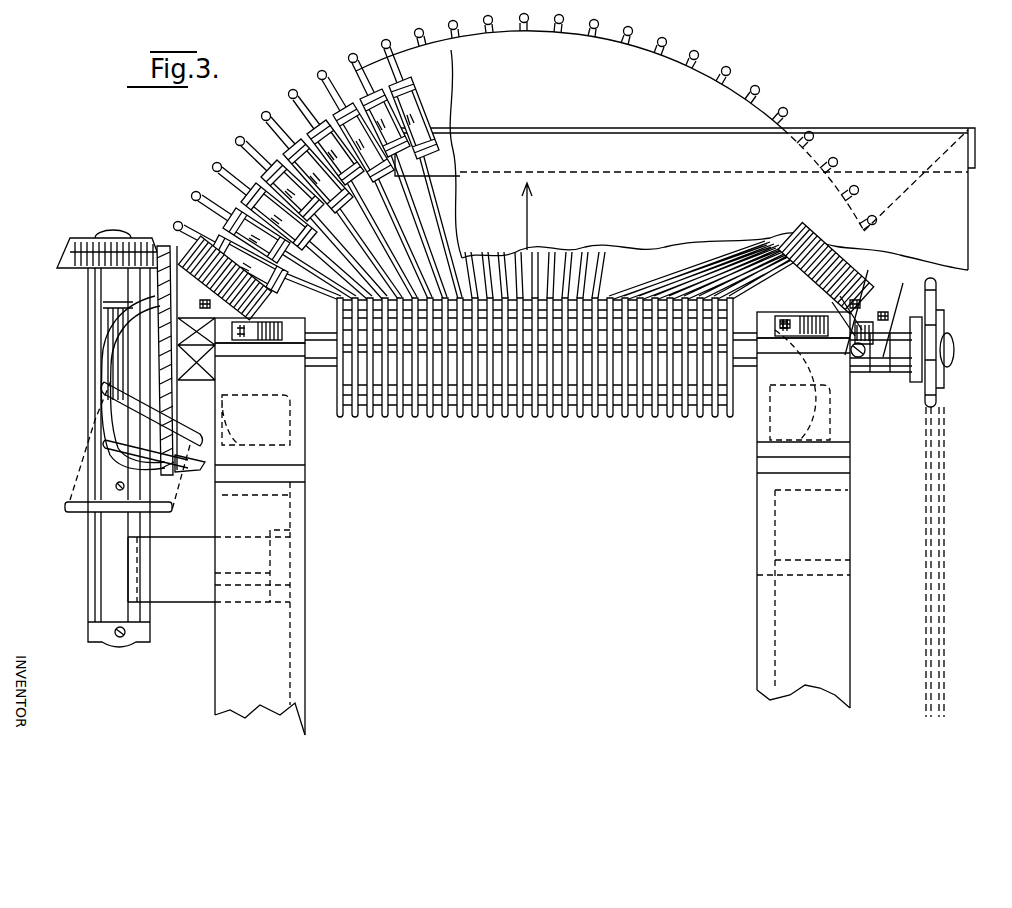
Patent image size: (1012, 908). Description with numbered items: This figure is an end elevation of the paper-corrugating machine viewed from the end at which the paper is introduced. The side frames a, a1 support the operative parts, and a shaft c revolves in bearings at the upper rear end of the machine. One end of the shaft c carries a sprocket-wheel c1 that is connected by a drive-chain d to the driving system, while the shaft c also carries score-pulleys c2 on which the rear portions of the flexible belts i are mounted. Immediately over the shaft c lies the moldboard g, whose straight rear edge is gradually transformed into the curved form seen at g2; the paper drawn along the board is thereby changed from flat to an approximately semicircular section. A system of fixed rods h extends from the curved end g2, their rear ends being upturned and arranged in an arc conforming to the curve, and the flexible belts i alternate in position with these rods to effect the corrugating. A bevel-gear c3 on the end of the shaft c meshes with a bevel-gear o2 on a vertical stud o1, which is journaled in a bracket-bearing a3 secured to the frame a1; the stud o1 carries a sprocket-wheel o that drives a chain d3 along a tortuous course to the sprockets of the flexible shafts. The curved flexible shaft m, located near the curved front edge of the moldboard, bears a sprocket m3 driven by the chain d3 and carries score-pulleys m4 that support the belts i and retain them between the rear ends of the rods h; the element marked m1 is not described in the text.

The side frame a is at (803, 510).
The side frame a1 is at (295, 550).
The bracket-bearing a3 is at (209, 566).
The shaft c is at (954, 348).
The sprocket-wheel c1 is at (936, 300).
The score-pulleys c2 is at (550, 417).
The bevel-gear c3 is at (163, 247).
The drive-chain d is at (940, 512).
The chain d3 is at (75, 477).
The moldboard g is at (652, 133).
The curved end of moldboard g2 is at (538, 30).
The fixed rods h is at (240, 143).
The flexible belts i is at (355, 78).
The flexible shaft m is at (242, 283).
The lever m1 is at (900, 292).
The sprocket m3 is at (110, 393).
The score-pulleys m4 is at (790, 262).
The sprocket-wheel o is at (85, 510).
The vertical stud o1 is at (115, 347).
The bevel-gear o2 is at (68, 247).